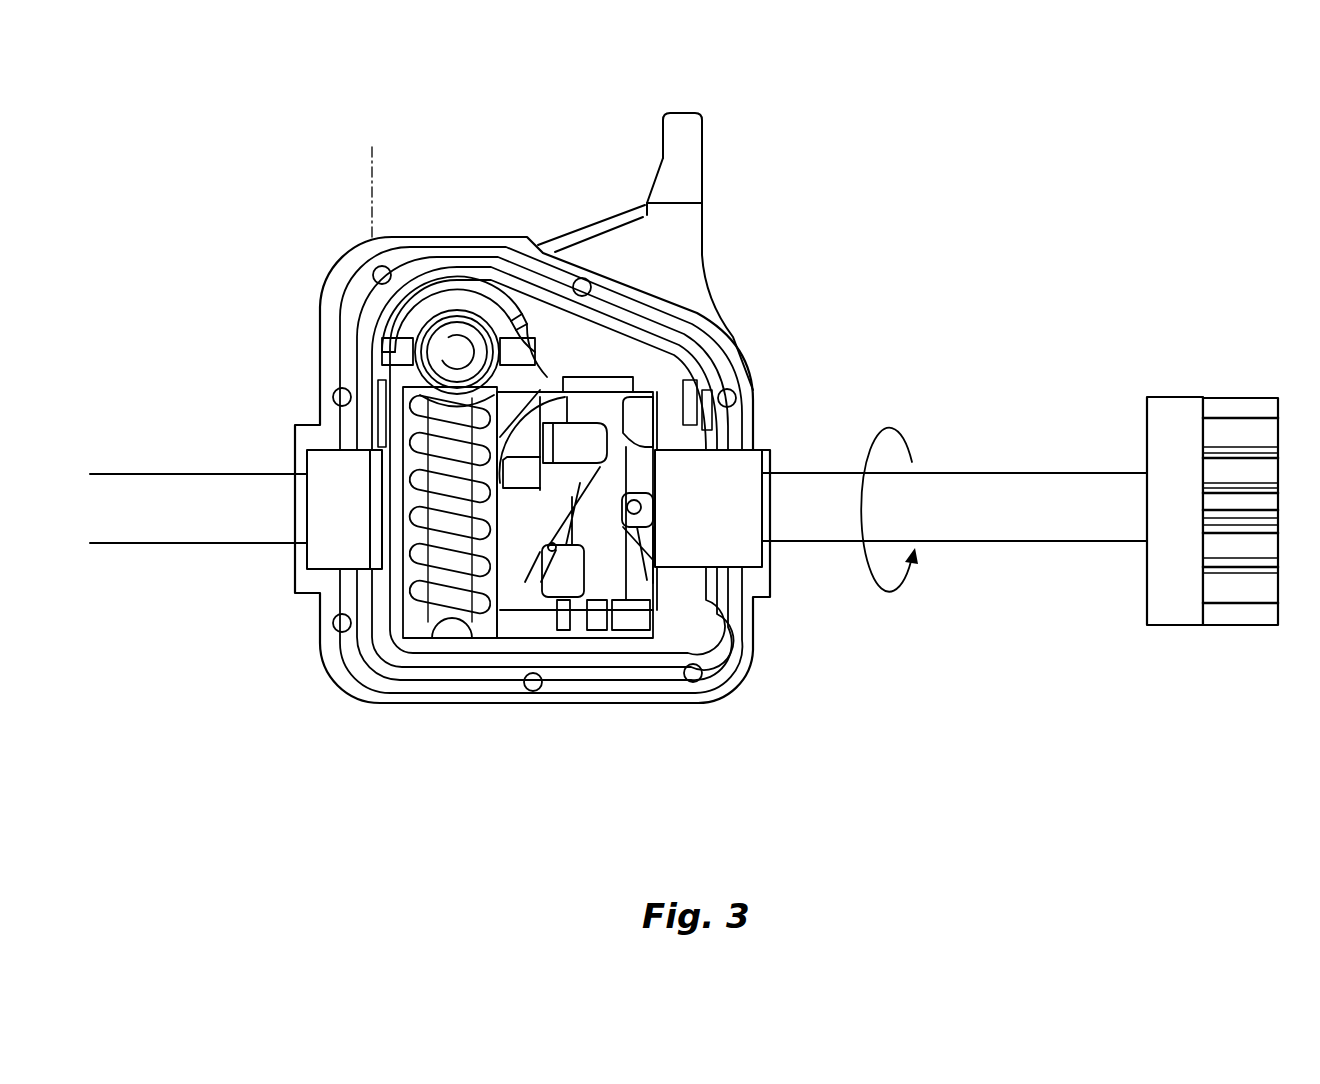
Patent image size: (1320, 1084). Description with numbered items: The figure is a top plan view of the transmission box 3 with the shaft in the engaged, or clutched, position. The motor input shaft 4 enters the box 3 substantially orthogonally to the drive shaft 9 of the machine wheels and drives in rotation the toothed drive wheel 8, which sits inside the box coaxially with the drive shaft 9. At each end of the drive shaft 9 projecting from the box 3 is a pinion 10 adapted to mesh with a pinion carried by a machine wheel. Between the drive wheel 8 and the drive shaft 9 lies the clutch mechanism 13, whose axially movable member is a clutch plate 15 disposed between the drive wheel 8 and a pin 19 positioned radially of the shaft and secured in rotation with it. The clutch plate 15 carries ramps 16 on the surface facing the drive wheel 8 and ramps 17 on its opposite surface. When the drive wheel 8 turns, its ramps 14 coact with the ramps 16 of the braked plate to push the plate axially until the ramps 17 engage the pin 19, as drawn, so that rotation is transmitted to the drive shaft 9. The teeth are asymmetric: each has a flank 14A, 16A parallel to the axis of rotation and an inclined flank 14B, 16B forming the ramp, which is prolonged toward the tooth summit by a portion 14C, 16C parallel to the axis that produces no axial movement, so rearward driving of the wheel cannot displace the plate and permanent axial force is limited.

The transmission box 3 is at (340, 278).
The motor input shaft 4 is at (444, 345).
The drive wheel 8 is at (447, 560).
The drive shaft 9 is at (192, 522).
The pinion 10 is at (1246, 592).
The clutch mechanism 13 is at (823, 778).
The ramps 14 is at (520, 590).
The flank 14A is at (532, 425).
The inclined flank 14B is at (515, 625).
The flank portion 14C is at (560, 545).
The clutch plate 15 is at (615, 595).
The ramps 16 is at (575, 585).
The flank 16A is at (588, 590).
The inclined flank 16B is at (562, 547).
The flank portion 16C is at (547, 547).
The ramps 17 is at (645, 585).
The pin 19 is at (690, 585).